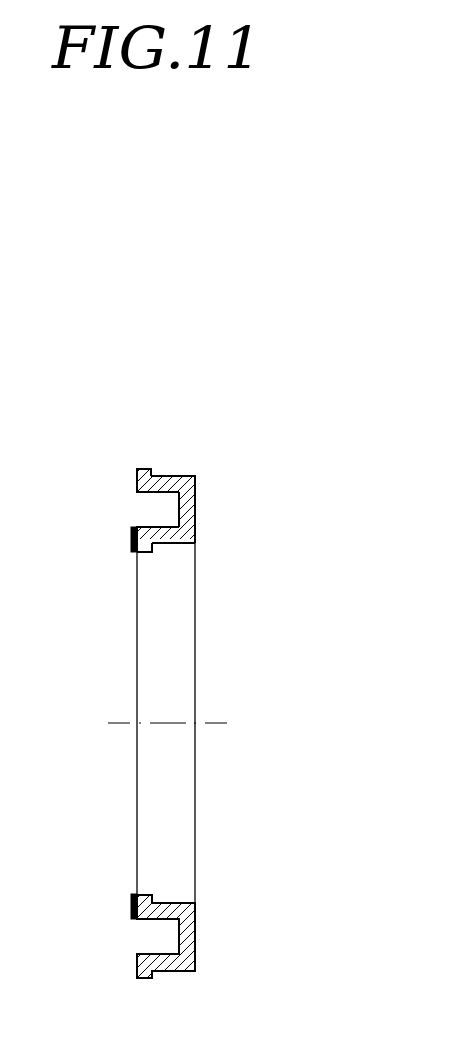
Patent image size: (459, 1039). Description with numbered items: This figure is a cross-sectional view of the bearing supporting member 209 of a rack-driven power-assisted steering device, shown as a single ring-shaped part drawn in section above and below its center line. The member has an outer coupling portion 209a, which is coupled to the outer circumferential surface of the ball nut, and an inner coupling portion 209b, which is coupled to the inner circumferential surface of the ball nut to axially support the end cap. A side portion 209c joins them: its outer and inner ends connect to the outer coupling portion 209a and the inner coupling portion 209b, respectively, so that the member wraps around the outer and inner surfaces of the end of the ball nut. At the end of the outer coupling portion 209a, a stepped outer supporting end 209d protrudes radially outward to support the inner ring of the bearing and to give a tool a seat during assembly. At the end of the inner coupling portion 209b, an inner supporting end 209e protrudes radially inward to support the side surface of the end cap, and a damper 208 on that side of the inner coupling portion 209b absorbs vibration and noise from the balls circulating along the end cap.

The bearing supporting member 209 is at (82, 351).
The outer coupling portion 209a is at (173, 481).
The inner coupling portion 209b is at (170, 535).
The side portion 209c is at (192, 512).
The outer supporting end 209d is at (144, 468).
The inner supporting end 209e is at (143, 553).
The damper 208 is at (131, 533).